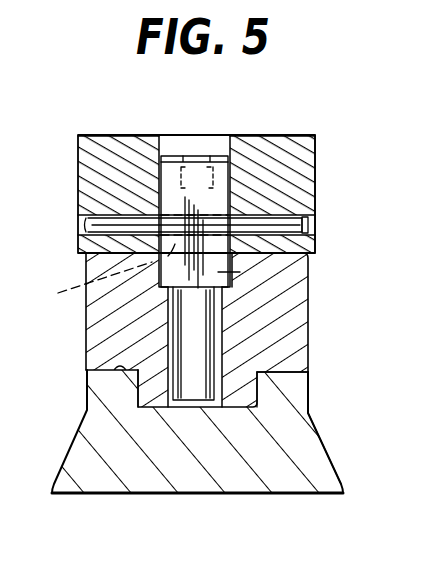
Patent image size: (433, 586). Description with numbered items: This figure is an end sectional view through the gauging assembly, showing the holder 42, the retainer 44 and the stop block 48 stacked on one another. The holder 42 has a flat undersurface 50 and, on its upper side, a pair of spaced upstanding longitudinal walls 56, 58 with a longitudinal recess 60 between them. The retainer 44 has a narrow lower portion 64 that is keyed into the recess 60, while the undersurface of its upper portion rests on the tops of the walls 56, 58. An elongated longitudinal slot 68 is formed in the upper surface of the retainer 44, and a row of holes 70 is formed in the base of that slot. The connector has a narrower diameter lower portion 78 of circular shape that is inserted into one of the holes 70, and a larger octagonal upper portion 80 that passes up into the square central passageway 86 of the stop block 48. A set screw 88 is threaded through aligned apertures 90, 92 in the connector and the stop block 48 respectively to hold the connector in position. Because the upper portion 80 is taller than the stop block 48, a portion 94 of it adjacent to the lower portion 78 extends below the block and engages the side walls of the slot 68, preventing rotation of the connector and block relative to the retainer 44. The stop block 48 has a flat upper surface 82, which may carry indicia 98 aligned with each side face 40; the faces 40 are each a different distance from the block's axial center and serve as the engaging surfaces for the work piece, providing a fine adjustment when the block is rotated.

The side face 40 is at (78, 173).
The holder 42 is at (205, 495).
The retainer 44 is at (311, 326).
The stop block 48 is at (318, 133).
The flat undersurface 50 is at (275, 494).
The upstanding longitudinal wall 56 is at (283, 368).
The upstanding longitudinal wall 58 is at (87, 410).
The longitudinal recess 60 is at (258, 388).
The narrow lower portion 64 is at (108, 323).
The elongated longitudinal slot 68 is at (250, 265).
The hole 70 is at (228, 353).
The narrower diameter lower portion 78 is at (183, 333).
The upper portion 80 is at (220, 195).
The flat upper surface 82 is at (103, 136).
The square central passageway 86 is at (183, 150).
The set screw 88 is at (305, 222).
The aperture 90 is at (96, 288).
The aperture 92 is at (312, 232).
The portion 94 is at (240, 272).
The indicia 98 is at (277, 134).